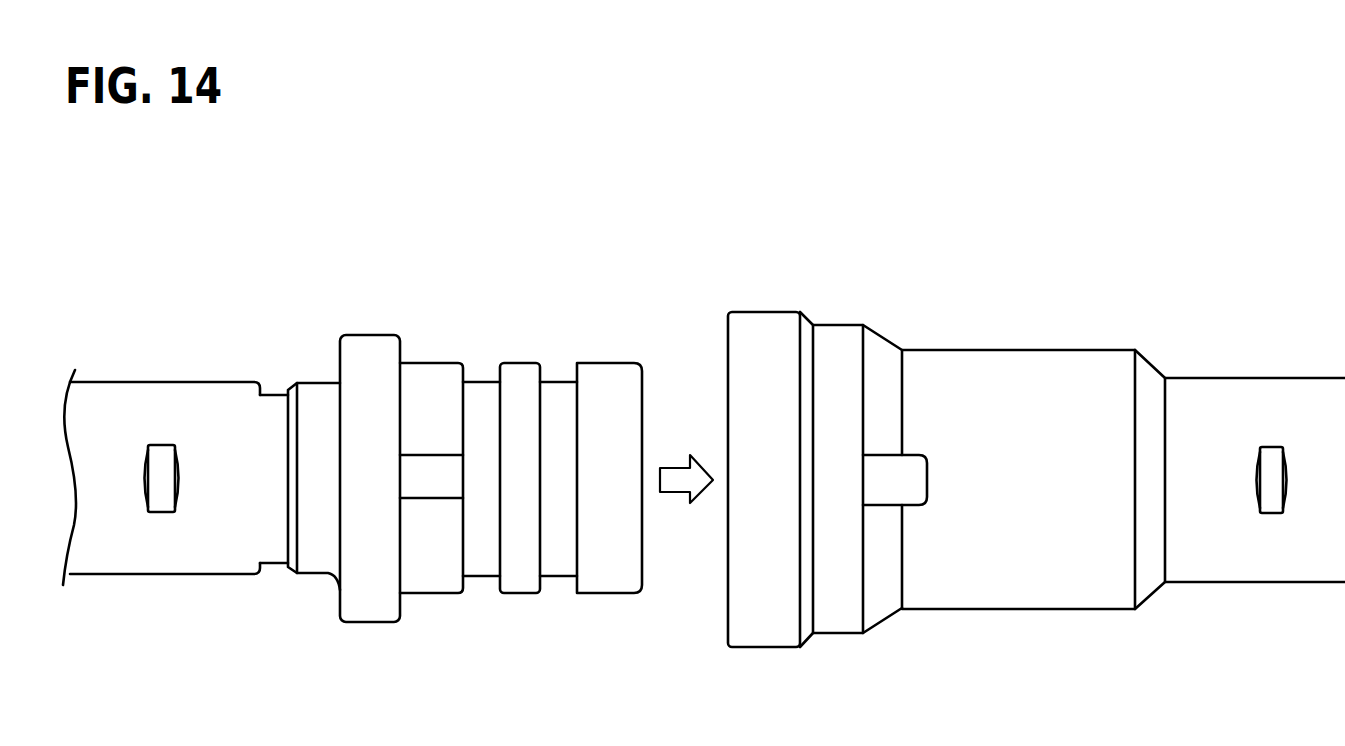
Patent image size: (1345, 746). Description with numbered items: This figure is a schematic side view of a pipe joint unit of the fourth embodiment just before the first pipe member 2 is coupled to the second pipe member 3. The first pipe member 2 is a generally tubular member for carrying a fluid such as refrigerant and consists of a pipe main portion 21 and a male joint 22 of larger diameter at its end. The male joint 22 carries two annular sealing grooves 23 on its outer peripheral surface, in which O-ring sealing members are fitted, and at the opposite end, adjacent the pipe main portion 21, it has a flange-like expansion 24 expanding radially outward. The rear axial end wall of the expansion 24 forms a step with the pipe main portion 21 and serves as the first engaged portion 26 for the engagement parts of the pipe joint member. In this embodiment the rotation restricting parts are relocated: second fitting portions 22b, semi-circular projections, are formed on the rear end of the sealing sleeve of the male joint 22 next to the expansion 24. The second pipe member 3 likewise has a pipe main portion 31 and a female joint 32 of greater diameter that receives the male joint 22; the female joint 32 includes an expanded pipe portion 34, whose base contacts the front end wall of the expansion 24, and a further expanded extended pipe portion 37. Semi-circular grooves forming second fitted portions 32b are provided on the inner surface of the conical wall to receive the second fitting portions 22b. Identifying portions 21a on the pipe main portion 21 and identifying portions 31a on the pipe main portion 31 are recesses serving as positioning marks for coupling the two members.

The first pipe member 2 is at (352, 488).
The pipe main portion 21 is at (161, 468).
The identifying portions 21a is at (161, 457).
The male joint 22 is at (521, 487).
The second fitting portions 22b is at (429, 472).
The sealing grooves 23 is at (558, 382).
The expansion 24 is at (371, 624).
The first engaged portion 26 is at (338, 594).
The second pipe member 3 is at (1036, 447).
The pipe main portion 31 is at (1255, 450).
The identifying portions 31a is at (1272, 453).
The female joint 32 is at (1014, 448).
The second fitted portions 32b is at (913, 468).
The expanded pipe portion 34 is at (827, 328).
The extended pipe portion 37 is at (760, 314).